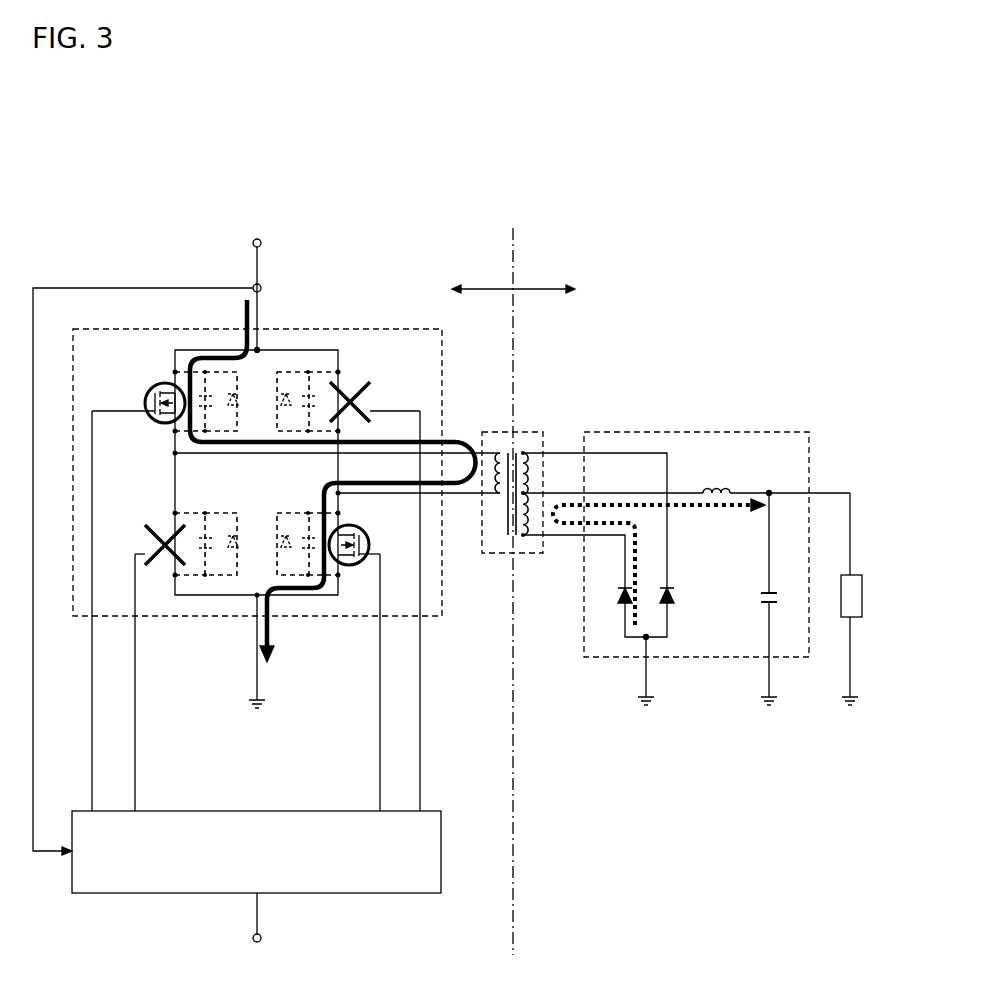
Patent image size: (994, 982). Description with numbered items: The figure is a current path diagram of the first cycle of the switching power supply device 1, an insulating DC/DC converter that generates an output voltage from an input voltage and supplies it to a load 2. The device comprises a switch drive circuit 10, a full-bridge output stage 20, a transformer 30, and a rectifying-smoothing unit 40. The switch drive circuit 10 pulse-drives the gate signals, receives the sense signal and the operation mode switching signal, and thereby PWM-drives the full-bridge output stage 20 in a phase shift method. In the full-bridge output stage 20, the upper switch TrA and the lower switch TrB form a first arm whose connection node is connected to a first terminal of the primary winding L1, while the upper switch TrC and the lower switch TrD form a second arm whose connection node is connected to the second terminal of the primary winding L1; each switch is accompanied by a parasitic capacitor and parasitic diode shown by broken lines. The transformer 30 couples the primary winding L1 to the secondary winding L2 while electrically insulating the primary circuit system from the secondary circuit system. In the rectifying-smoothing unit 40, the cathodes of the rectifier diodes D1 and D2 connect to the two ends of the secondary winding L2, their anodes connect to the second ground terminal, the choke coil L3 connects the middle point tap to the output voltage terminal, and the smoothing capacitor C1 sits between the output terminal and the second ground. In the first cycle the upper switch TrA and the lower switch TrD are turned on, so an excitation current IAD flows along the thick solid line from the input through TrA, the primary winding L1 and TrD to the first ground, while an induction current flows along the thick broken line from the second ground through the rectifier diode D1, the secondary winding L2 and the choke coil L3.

The switching power supply device 1 is at (771, 316).
The load 2 is at (862, 597).
The switch drive circuit 10 is at (259, 811).
The full-bridge output stage 20 is at (331, 329).
The transformer 30 is at (527, 432).
The rectifying-smoothing unit 40 is at (701, 432).
The upper switch TrA is at (138, 390).
The lower switch TrB is at (153, 531).
The upper switch TrC is at (357, 388).
The lower switch TrD is at (357, 531).
The excitation current IAD is at (471, 432).
The primary winding L1 is at (496, 470).
The secondary winding L2 is at (530, 470).
The choke coil L3 is at (715, 488).
The rectifier diode D1 is at (618, 587).
The rectifier diode D2 is at (674, 587).
The smoothing capacitor C1 is at (762, 598).